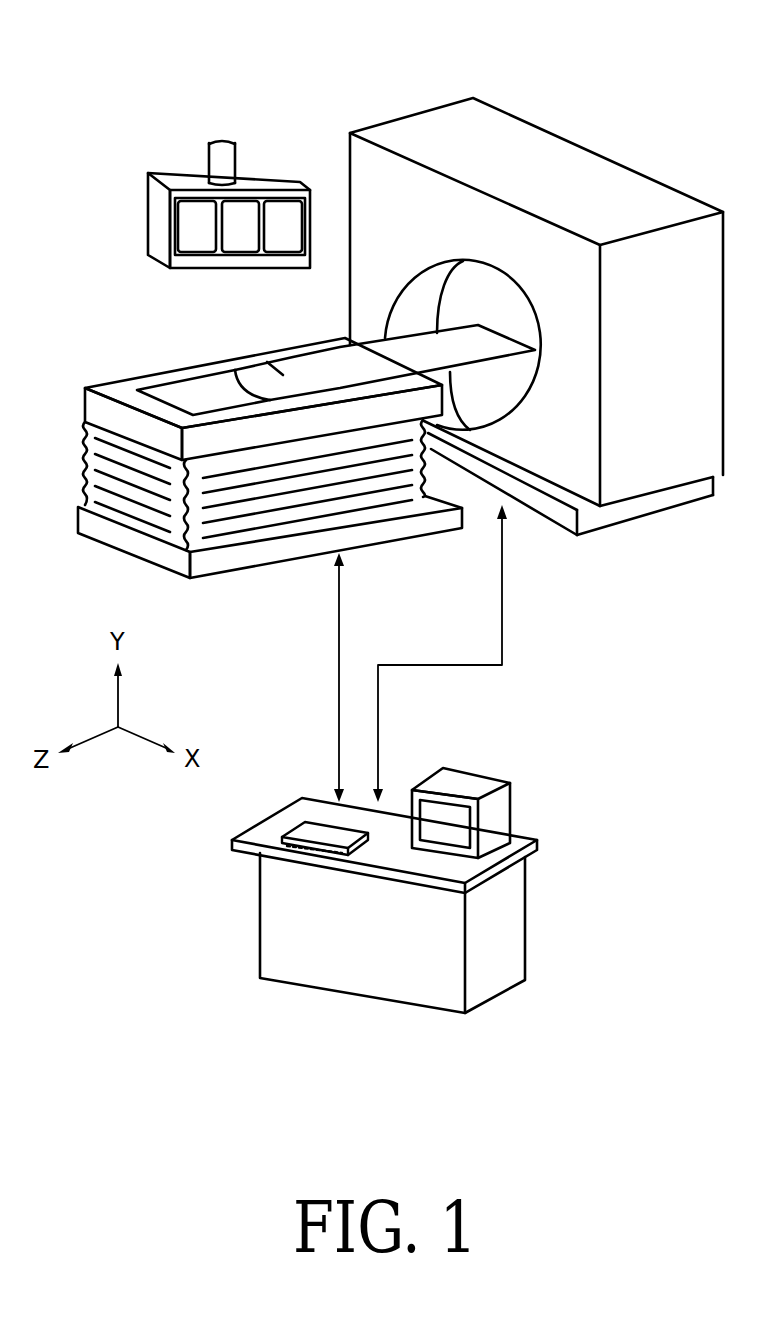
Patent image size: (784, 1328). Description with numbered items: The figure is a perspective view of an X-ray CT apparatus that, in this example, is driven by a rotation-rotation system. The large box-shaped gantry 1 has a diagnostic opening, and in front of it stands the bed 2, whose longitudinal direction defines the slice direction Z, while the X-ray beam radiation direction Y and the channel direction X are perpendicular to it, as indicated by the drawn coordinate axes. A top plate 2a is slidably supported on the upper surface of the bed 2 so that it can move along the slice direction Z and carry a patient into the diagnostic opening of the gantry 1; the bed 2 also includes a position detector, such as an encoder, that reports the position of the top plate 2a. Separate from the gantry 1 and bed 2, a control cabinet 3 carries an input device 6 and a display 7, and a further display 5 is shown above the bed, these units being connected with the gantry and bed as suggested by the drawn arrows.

The gantry 1 is at (600, 130).
The bed 2 is at (93, 412).
The top plate 2a is at (247, 355).
The control cabinet 3 is at (510, 930).
The display 5 is at (158, 215).
The input device 6 is at (292, 852).
The display 7 is at (483, 775).